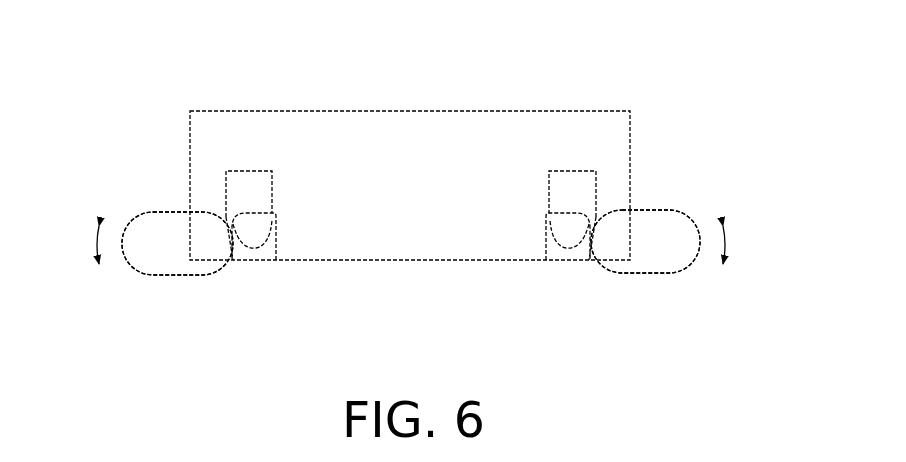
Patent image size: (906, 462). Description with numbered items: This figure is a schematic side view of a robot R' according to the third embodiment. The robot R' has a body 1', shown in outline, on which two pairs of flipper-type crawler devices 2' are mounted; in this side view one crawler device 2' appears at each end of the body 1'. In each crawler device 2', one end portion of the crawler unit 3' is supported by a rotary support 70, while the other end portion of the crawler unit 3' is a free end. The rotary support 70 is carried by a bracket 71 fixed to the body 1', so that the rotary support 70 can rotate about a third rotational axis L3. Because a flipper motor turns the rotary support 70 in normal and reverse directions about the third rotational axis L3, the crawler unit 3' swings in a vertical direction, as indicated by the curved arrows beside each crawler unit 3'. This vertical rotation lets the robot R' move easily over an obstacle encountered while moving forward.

The body 1' is at (410, 148).
The robot R' is at (620, 61).
The crawler device 2' is at (406, 203).
The crawler unit 3' is at (411, 268).
The bracket 71 is at (263, 183).
The rotary support 70 is at (267, 257).
The third rotational axis L3 is at (250, 232).